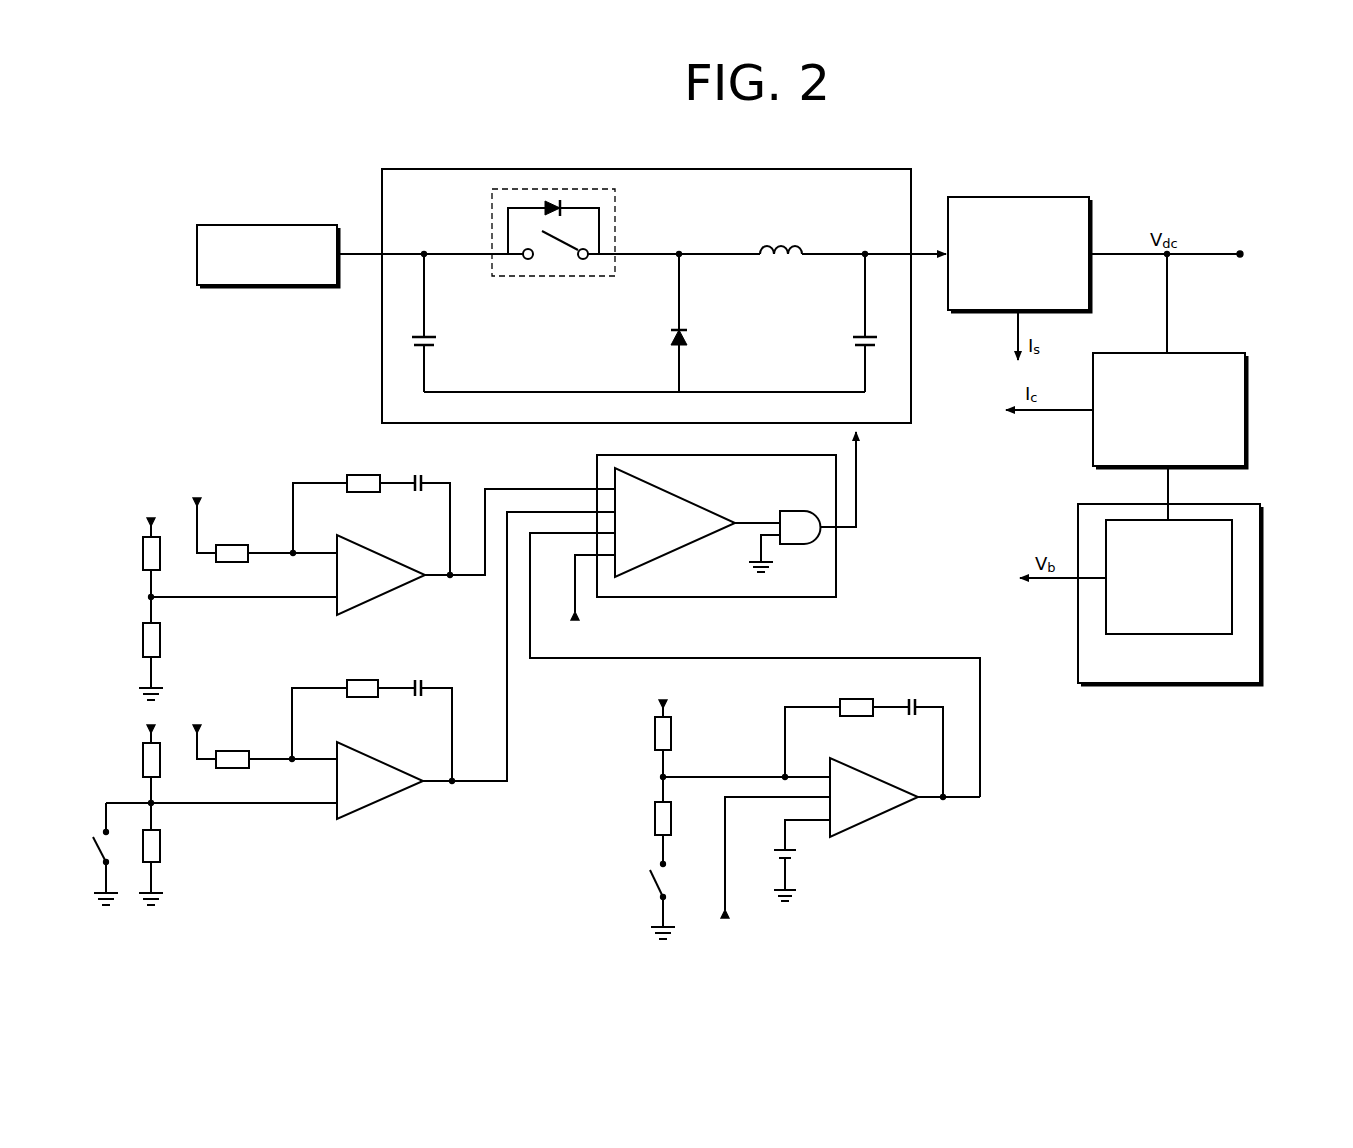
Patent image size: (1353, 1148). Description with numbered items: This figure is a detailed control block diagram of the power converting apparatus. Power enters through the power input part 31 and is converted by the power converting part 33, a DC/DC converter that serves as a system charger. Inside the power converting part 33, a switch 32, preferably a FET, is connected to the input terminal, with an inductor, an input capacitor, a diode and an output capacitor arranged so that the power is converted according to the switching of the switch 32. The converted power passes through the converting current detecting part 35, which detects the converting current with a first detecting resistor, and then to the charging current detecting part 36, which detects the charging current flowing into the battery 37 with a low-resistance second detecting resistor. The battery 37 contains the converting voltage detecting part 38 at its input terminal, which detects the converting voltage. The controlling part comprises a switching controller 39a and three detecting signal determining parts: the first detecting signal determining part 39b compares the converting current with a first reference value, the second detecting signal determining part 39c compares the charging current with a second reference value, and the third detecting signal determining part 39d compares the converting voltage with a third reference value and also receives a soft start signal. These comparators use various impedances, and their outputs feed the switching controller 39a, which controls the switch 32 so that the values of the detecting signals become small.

The power input part 31 is at (267, 224).
The switch 32 is at (548, 189).
The power converting part 33 is at (382, 375).
The converting current detecting part 35 is at (1013, 197).
The charging current detecting part 36 is at (1247, 410).
The battery 37 is at (1170, 688).
The converting voltage detecting part 38 is at (1232, 577).
The switching controller 39a is at (836, 572).
The first detecting signal determining part 39b is at (392, 590).
The second detecting signal determining part 39c is at (393, 795).
The third detecting signal determining part 39d is at (887, 813).